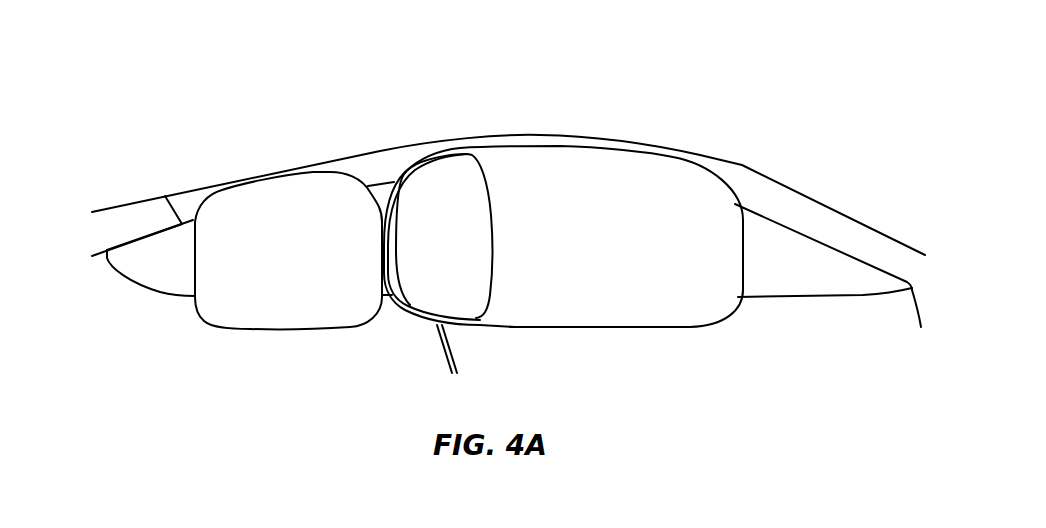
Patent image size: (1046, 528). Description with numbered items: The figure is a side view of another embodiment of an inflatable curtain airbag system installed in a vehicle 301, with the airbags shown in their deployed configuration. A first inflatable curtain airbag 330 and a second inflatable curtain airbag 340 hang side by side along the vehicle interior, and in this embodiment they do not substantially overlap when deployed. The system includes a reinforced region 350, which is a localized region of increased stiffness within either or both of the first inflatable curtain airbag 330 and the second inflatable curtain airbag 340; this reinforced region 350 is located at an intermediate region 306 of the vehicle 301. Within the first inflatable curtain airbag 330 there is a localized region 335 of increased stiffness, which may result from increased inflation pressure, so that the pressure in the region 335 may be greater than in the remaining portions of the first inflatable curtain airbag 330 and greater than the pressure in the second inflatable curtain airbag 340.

The vehicle 301 is at (581, 123).
The intermediate region 306 is at (407, 134).
The first inflatable curtain airbag 330 is at (640, 203).
The localized region of increased stiffness 335 is at (463, 253).
The second inflatable curtain airbag 340 is at (248, 228).
The reinforced region 350 is at (433, 260).